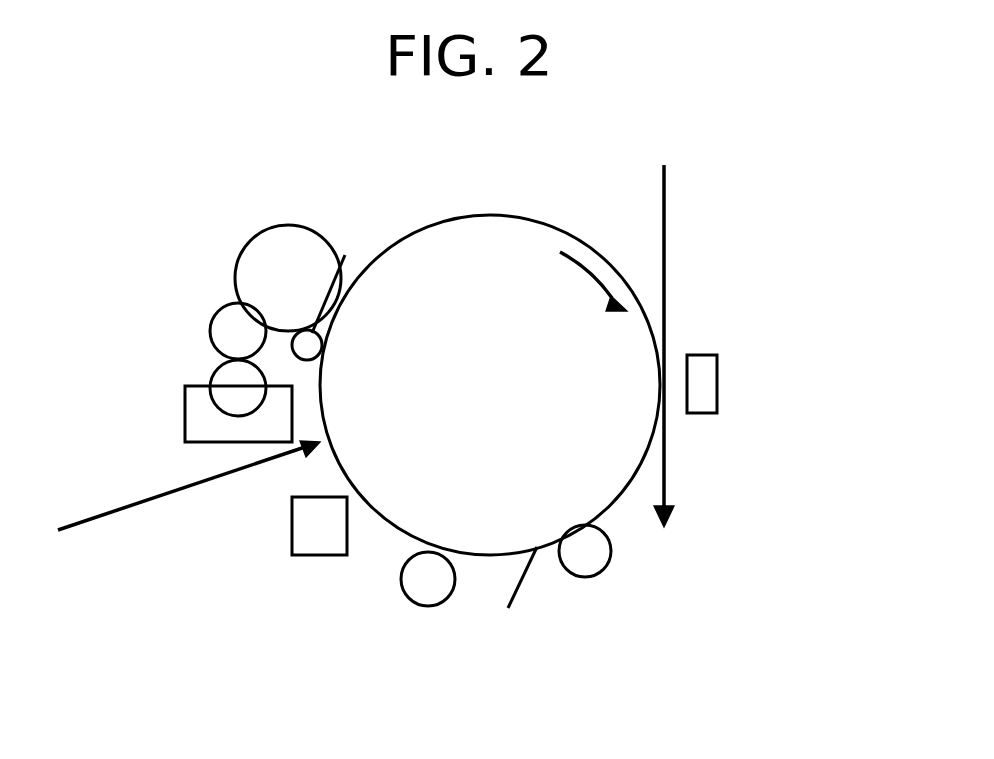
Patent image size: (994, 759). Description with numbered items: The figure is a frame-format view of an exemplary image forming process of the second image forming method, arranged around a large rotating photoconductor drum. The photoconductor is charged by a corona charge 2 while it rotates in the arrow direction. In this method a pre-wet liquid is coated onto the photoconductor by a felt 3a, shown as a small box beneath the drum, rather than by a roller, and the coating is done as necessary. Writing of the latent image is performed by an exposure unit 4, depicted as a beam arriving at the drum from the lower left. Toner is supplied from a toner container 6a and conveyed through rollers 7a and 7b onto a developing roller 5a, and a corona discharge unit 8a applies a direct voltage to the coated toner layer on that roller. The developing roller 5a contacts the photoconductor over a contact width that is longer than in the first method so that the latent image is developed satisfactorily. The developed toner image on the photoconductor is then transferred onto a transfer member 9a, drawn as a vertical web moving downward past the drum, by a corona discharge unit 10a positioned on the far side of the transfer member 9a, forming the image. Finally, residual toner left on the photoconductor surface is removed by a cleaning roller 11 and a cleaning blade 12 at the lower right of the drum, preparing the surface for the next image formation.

The corona charge 2 is at (440, 618).
The felt 3a is at (319, 568).
The exposure unit 4 is at (189, 476).
The developing roller 5a is at (288, 243).
The toner container 6a is at (196, 405).
The roller 7a is at (205, 364).
The roller 7b is at (210, 306).
The corona discharge unit 8a is at (351, 270).
The transfer member 9a is at (701, 346).
The corona discharge unit 10a is at (740, 360).
The cleaning roller 11 is at (625, 569).
The cleaning blade 12 is at (555, 592).